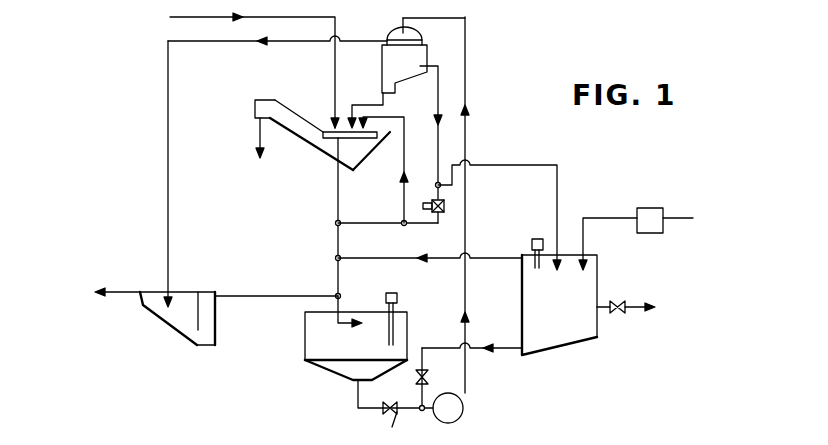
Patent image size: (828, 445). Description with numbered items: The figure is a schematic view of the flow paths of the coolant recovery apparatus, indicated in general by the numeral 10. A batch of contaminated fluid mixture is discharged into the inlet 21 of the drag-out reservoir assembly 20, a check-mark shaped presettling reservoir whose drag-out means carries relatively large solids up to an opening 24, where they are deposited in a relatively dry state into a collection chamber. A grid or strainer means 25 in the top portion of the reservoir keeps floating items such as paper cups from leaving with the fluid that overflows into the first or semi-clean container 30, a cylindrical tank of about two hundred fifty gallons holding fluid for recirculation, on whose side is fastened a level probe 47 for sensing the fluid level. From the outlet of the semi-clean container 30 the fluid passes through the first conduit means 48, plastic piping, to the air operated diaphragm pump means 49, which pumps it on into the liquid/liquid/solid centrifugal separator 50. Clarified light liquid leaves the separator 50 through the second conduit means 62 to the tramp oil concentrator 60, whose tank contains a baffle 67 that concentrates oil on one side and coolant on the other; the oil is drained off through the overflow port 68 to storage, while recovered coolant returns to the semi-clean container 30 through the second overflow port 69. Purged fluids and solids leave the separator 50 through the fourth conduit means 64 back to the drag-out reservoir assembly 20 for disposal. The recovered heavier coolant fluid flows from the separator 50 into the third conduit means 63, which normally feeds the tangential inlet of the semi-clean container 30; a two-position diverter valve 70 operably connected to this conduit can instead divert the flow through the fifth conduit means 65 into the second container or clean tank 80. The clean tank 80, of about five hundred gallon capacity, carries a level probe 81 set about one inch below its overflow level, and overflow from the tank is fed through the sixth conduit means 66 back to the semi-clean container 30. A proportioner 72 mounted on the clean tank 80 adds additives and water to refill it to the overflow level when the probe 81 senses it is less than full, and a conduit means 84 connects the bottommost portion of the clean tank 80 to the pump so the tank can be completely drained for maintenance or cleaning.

The invention 10 is at (135, 97).
The drag-out reservoir assembly 20 is at (297, 148).
The inlet 21 is at (333, 113).
The opening 24 is at (255, 118).
The grid or strainer means 25 is at (362, 142).
The semi-clean container 30 is at (304, 346).
The level probe 47 is at (413, 311).
The first conduit means 48 is at (467, 126).
The pump means 49 is at (456, 423).
The centrifugal separator 50 is at (446, 44).
The tramp oil concentrator 60 is at (199, 281).
The second conduit means 62 is at (168, 176).
The third conduit means 63 is at (442, 87).
The fourth conduit means 64 is at (352, 104).
The fifth conduit means 65 is at (533, 167).
The sixth conduit means 66 is at (490, 262).
The baffle 67 is at (197, 315).
The overflow port 68 is at (136, 292).
The second overflow port 69 is at (218, 294).
The diverter valve 70 is at (444, 206).
The proportioner 72 is at (649, 208).
The clean tank 80 is at (606, 282).
The level probe 81 is at (531, 239).
The conduit means 84 is at (505, 350).